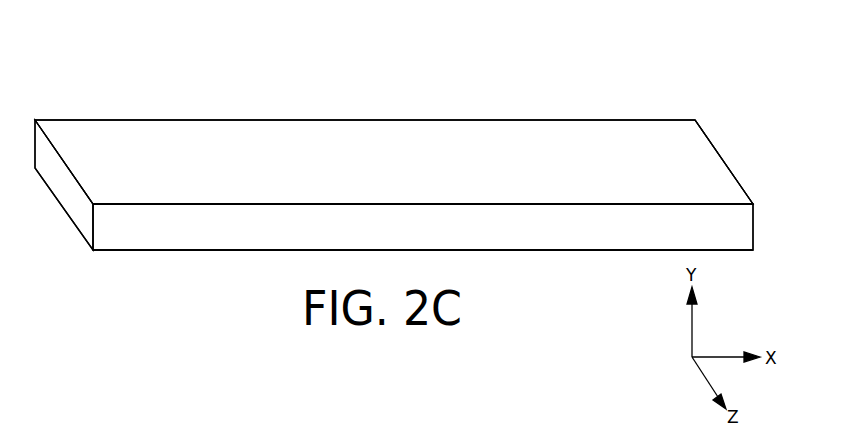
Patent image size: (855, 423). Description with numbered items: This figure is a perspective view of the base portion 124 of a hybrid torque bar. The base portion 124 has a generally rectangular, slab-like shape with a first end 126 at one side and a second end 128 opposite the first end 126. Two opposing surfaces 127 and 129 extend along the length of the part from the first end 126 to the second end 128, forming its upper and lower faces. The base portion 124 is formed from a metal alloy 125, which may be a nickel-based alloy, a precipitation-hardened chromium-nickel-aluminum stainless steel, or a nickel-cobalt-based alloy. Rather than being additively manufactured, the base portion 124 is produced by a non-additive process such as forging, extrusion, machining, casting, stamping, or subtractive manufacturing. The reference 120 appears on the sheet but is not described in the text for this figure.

The light source assembly 120 is at (448, 412).
The base portion 124 is at (539, 75).
The metal alloy 125 is at (430, 239).
The first end 126 is at (710, 140).
The opposing surface 127 is at (320, 143).
The second end 128 is at (48, 137).
The opposing surface 129 is at (220, 252).